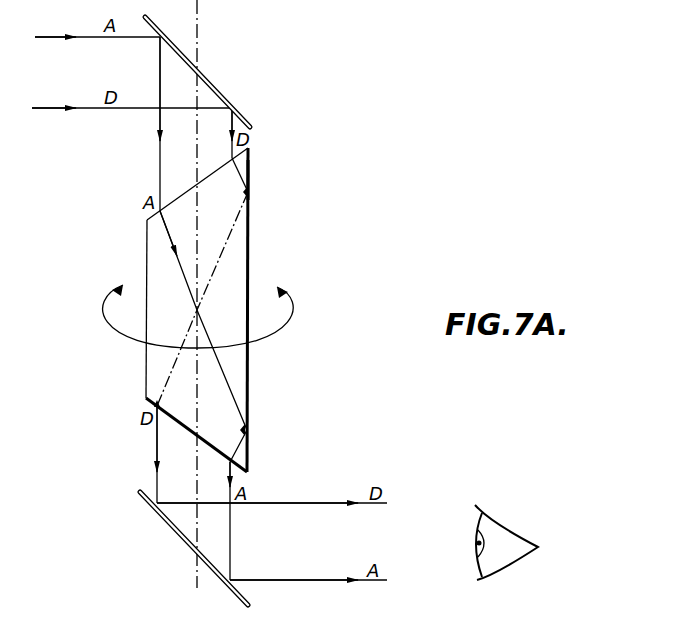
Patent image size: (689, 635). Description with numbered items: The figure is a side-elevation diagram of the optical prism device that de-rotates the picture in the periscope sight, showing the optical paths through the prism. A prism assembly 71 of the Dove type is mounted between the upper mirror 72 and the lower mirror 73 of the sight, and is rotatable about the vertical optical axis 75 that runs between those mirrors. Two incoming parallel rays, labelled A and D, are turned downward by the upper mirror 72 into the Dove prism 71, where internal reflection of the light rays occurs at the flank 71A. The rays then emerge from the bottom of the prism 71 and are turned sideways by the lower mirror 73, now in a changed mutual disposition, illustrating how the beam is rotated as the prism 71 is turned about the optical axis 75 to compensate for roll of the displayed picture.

The prism assembly 71 is at (146, 243).
The flank 71A is at (249, 178).
The upper mirror 72 is at (243, 117).
The lower mirror 73 is at (146, 500).
The vertical optical axis 75 is at (203, 28).